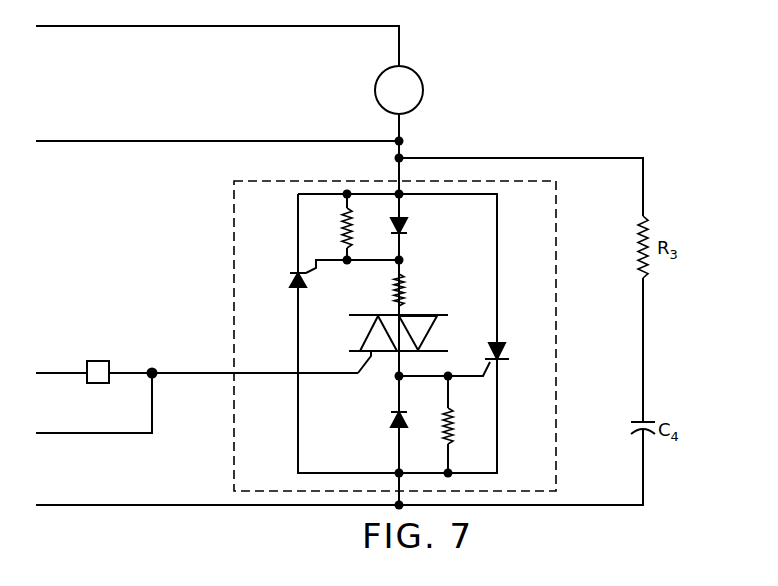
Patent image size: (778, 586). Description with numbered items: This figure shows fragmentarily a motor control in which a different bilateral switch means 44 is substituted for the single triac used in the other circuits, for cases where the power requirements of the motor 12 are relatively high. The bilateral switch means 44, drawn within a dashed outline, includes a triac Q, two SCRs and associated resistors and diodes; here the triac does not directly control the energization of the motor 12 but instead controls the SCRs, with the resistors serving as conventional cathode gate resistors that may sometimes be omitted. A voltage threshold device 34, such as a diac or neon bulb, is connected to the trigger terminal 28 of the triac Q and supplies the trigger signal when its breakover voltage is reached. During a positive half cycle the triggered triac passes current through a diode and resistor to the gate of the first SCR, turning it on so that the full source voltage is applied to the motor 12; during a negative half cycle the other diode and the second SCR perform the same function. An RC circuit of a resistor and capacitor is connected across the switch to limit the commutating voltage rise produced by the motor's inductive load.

The motor 12 is at (411, 73).
The bilateral switch means 44 is at (441, 181).
The voltage threshold device 34 is at (97, 361).
The trigger terminal 28 is at (364, 373).